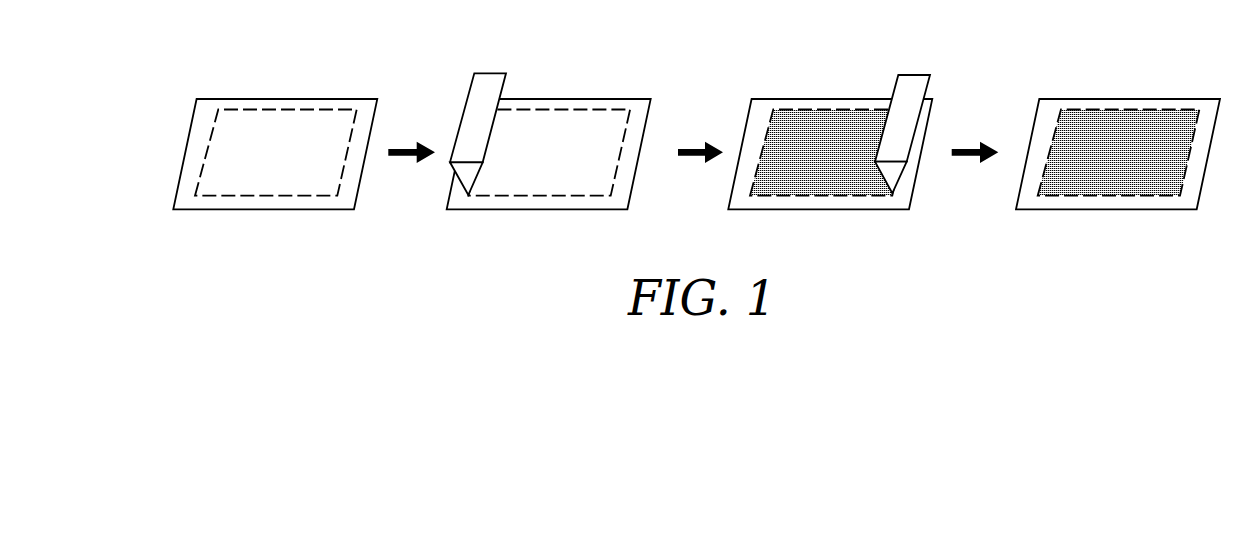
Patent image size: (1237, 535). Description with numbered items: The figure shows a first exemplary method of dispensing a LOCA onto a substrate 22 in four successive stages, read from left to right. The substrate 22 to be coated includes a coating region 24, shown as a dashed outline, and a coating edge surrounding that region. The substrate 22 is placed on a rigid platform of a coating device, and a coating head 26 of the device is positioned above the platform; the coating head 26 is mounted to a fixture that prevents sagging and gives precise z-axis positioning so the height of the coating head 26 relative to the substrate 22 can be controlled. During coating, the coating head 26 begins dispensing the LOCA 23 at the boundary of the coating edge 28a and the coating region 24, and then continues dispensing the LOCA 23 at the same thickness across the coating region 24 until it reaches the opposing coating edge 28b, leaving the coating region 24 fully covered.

The substrate 22 is at (198, 123).
The coating region 24 is at (285, 133).
The coating head 26 is at (485, 100).
The LOCA 23 is at (813, 133).
The coating edge 28a is at (760, 137).
The opposing coating edge 28b is at (1195, 130).